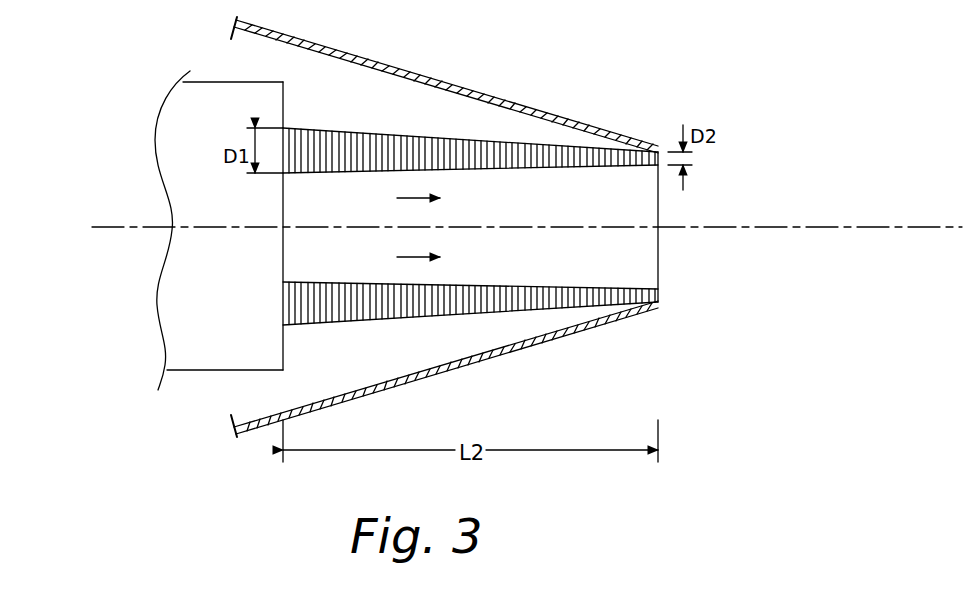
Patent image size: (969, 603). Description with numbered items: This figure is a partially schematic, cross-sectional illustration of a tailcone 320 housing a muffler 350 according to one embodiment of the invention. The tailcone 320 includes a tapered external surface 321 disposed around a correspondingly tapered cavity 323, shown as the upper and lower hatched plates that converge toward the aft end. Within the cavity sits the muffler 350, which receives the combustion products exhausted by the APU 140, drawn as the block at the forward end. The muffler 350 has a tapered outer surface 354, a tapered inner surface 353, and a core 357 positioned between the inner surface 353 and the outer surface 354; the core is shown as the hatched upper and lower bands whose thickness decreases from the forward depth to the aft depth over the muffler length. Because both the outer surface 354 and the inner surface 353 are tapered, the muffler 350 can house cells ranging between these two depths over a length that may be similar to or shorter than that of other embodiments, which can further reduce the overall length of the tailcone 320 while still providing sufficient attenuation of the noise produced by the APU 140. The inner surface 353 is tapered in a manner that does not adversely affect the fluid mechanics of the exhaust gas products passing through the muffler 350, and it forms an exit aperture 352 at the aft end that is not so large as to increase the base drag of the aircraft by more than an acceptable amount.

The tailcone 320 is at (550, 42).
The tapered external surface 321 is at (545, 121).
The tapered cavity 323 is at (278, 72).
The APU 140 is at (186, 117).
The tapered outer surface 354 is at (398, 134).
The tapered inner surface 353 is at (502, 172).
The exit aperture 352 is at (659, 270).
The core 357 is at (268, 305).
The muffler 350 is at (459, 336).